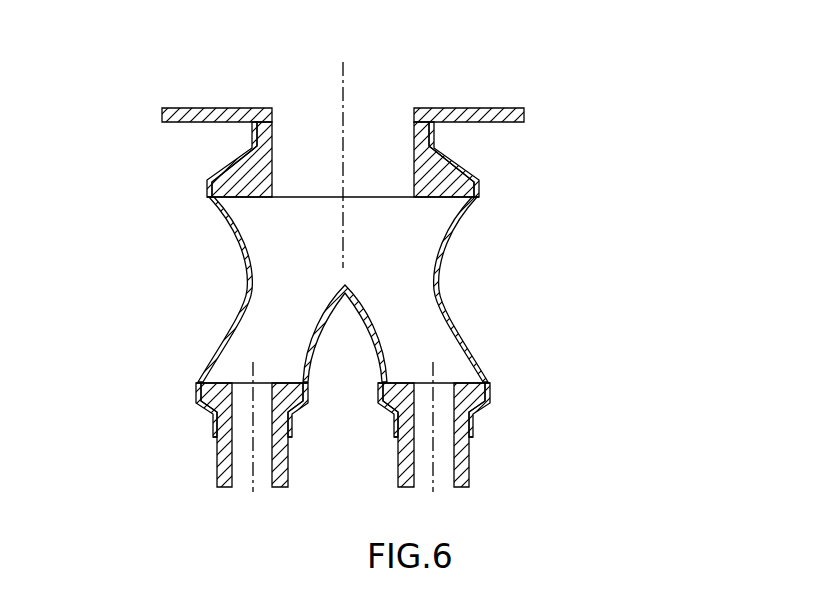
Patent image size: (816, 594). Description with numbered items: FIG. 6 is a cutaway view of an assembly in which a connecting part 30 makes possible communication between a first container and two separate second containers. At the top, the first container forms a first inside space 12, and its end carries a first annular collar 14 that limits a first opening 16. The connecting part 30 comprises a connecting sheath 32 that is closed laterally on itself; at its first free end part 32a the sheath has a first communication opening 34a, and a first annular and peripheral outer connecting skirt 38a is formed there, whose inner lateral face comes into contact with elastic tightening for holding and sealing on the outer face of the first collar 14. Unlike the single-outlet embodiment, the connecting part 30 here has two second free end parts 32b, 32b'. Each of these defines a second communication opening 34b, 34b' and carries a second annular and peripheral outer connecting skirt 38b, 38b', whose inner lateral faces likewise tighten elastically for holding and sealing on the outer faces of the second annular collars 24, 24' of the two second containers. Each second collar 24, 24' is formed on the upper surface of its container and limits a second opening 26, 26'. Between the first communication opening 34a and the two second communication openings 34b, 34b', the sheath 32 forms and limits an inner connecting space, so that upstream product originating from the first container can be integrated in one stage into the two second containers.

The first inside space 12 is at (315, 120).
The first annular collar 14 is at (422, 123).
The first opening 16 is at (393, 198).
The second annular collar 24 is at (197, 397).
The second annular collar 24' is at (494, 433).
The second opening 26 is at (218, 317).
The second opening 26' is at (480, 367).
The connecting part 30 is at (457, 292).
The connecting sheath 32 is at (458, 323).
The first free end part 32a is at (489, 167).
The second free end part 32b is at (185, 392).
The second free end part 32b' is at (530, 422).
The first communication opening 34a is at (355, 205).
The second communication opening 34b is at (184, 427).
The second communication opening 34b' is at (531, 464).
The first annular and peripheral outer connecting skirt 38a is at (478, 190).
The second annular and peripheral outer connecting skirt 38b is at (187, 419).
The second annular and peripheral outer connecting skirt 38b' is at (514, 461).